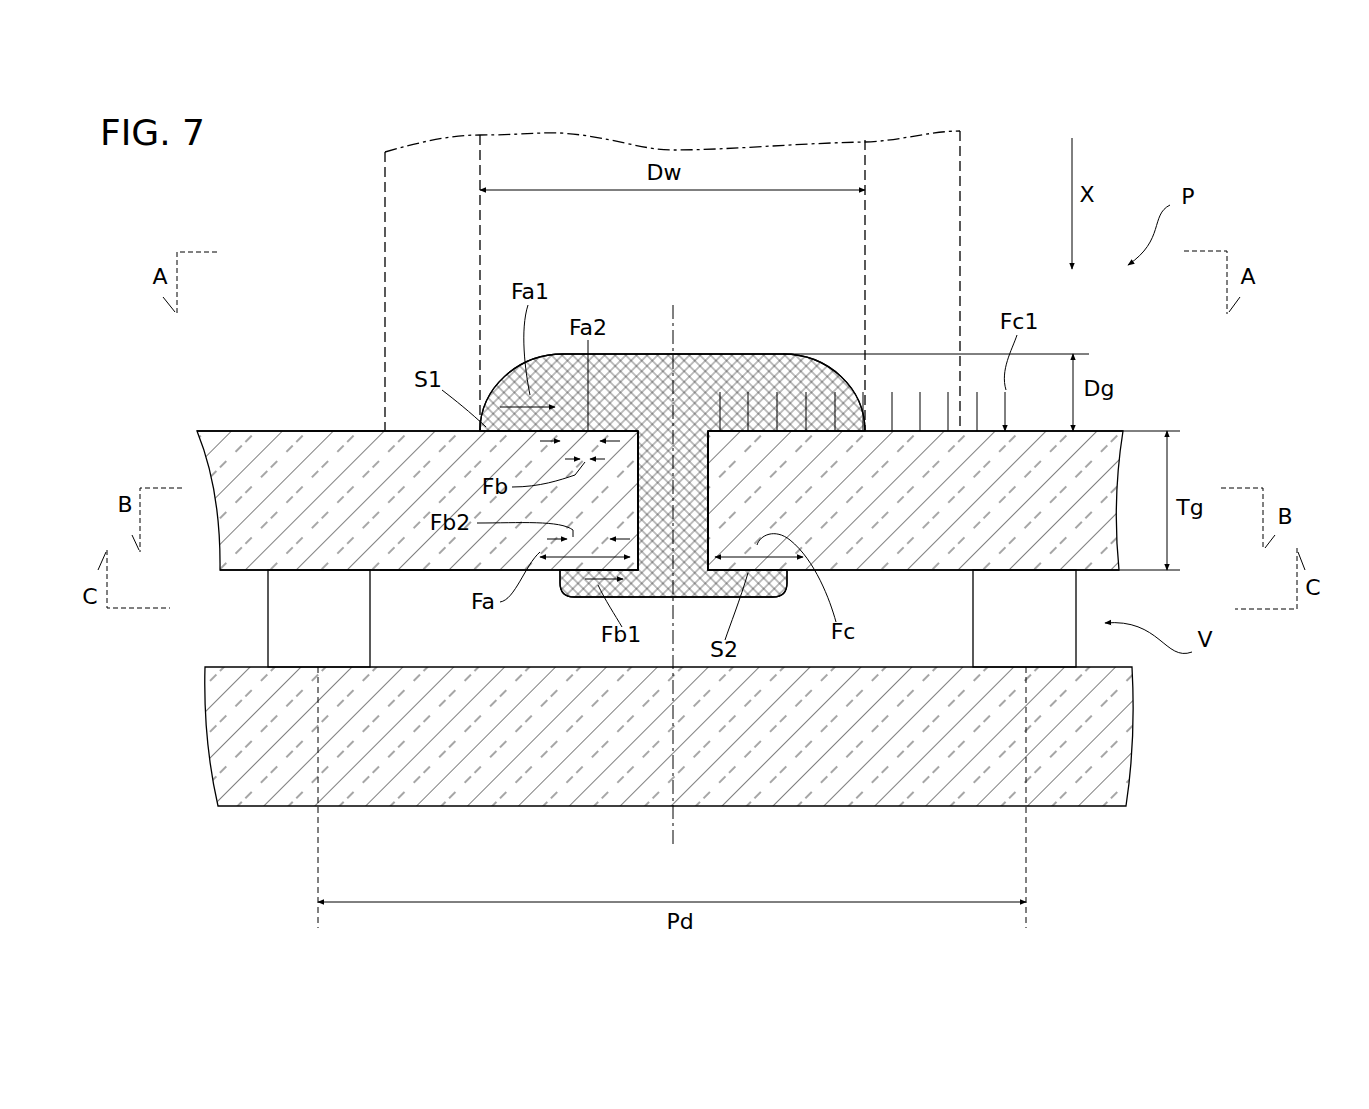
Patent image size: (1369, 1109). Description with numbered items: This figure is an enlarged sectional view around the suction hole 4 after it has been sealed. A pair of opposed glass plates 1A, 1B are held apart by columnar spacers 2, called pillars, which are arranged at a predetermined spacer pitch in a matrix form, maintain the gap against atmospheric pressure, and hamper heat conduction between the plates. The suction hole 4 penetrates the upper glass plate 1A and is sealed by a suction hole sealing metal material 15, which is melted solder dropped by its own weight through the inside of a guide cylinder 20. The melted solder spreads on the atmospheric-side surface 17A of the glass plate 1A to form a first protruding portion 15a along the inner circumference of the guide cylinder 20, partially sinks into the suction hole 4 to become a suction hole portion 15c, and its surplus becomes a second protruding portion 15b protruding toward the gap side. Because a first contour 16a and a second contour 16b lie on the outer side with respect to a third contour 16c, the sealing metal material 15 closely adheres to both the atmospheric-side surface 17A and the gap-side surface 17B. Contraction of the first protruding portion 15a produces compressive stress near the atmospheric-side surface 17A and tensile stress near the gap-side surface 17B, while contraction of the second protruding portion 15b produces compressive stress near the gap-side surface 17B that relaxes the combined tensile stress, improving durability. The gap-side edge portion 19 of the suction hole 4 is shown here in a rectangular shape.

The glass plate 1A is at (305, 430).
The glass plate 1B is at (280, 808).
The spacer 2 is at (293, 622).
The suction hole 4 is at (637, 487).
The suction hole sealing metal material 15 is at (688, 347).
The first protruding portion 15a is at (750, 354).
The second protruding portion 15b is at (558, 573).
The suction hole portion 15c is at (710, 465).
The first contour 16a is at (480, 431).
The second contour 16b is at (547, 573).
The third contour 16c is at (713, 553).
The atmospheric-side surface 17A is at (343, 428).
The gap-side surface 17B is at (427, 572).
The gap-side edge portion 19 is at (637, 432).
The guide cylinder 20 is at (960, 255).